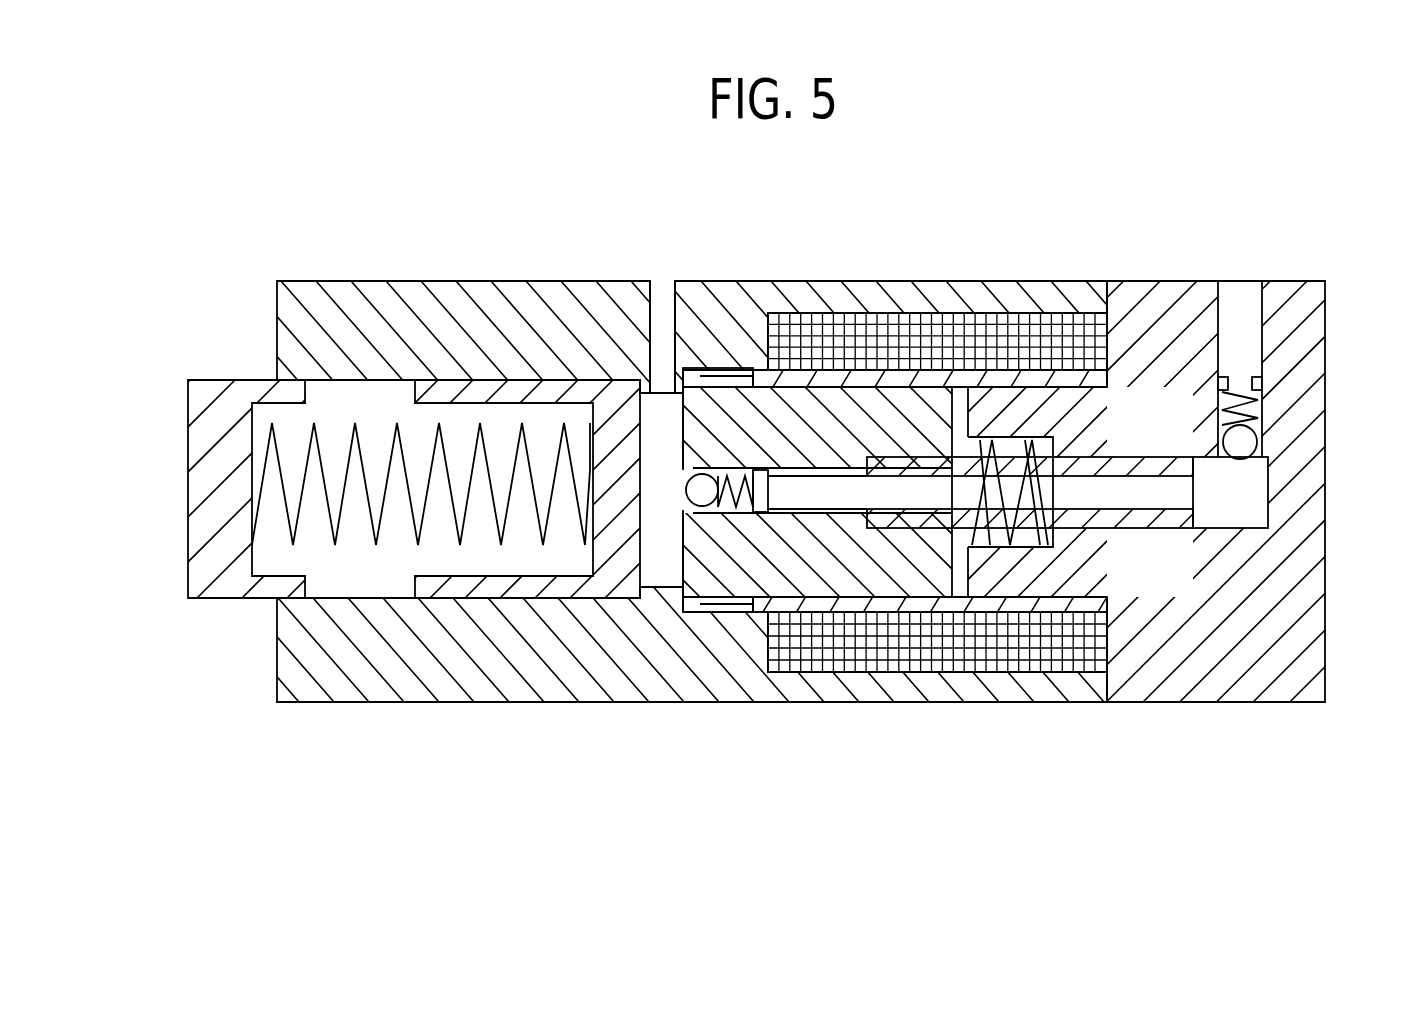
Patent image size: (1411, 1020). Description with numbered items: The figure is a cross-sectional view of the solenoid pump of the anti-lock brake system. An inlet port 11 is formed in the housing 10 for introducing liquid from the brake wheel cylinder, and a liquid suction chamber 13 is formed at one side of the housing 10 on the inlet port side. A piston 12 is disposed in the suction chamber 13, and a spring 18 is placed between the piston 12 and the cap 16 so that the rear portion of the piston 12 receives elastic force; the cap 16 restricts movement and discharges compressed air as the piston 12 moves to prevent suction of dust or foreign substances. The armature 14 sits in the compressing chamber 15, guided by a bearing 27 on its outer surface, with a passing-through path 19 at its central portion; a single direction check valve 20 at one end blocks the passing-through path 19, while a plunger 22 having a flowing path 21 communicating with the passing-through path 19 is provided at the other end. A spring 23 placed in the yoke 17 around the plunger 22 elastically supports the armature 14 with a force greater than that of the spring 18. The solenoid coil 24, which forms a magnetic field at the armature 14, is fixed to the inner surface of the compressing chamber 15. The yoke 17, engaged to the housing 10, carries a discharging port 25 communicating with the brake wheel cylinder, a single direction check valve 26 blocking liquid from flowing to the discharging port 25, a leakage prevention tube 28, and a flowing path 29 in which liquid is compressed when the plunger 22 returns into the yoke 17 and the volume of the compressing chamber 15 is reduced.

The housing 10 is at (367, 702).
The inlet port 11 is at (663, 296).
The piston 12 is at (500, 588).
The liquid suction chamber 13 is at (667, 567).
The armature 14 is at (807, 573).
The compressing chamber 15 is at (960, 578).
The cap 16 is at (205, 518).
The yoke 17 is at (1280, 660).
The spring 18 is at (352, 444).
The passing-through path 19 is at (852, 507).
The single direction check valve 20 is at (700, 507).
The flowing path 21 is at (1123, 493).
The plunger 22 is at (1152, 523).
The spring 23 is at (1022, 460).
The solenoid coil 24 is at (1027, 657).
The discharging port 25 is at (1233, 310).
The single direction check valve 26 is at (1242, 440).
The bearing 27 is at (738, 362).
The leakage prevention tube 28 is at (810, 375).
The flowing path 29 is at (1250, 510).